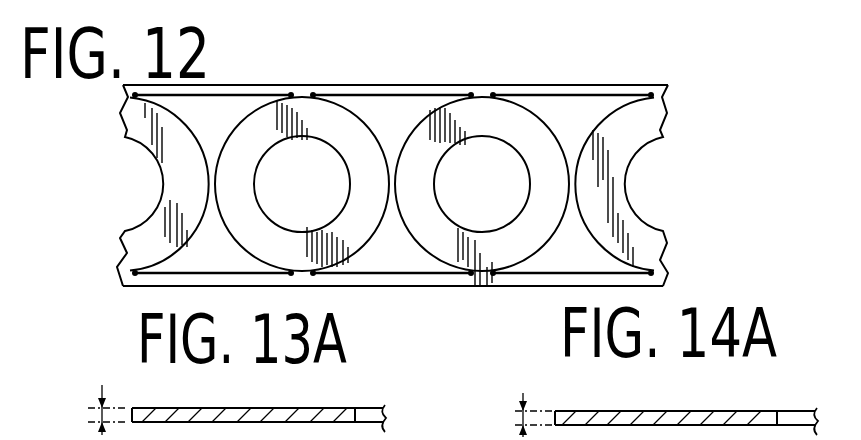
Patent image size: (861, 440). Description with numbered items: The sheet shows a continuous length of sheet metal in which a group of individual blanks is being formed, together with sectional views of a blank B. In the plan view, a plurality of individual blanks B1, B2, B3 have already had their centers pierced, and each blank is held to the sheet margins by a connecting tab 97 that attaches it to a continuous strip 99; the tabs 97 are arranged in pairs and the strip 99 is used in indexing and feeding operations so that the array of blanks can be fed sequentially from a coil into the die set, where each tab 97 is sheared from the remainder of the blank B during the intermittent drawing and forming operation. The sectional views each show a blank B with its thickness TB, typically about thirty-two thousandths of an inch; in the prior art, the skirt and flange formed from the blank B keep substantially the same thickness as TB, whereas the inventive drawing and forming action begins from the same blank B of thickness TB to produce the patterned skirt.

In FIG. 12, the connecting tab 97 is at (300, 102).
In FIG. 12, the continuous strip 99 is at (433, 93).
In FIG. 12, the first blank B1 is at (194, 146).
In FIG. 12, the second blank B2 is at (368, 148).
In FIG. 12, the third blank B3 is at (551, 148).
In FIG. 13A, the blank B is at (298, 405).
In FIG. 14A, the blank B is at (625, 400).
In FIG. 13A, the blank thickness TB is at (106, 395).
In FIG. 14A, the blank thickness TB is at (530, 399).